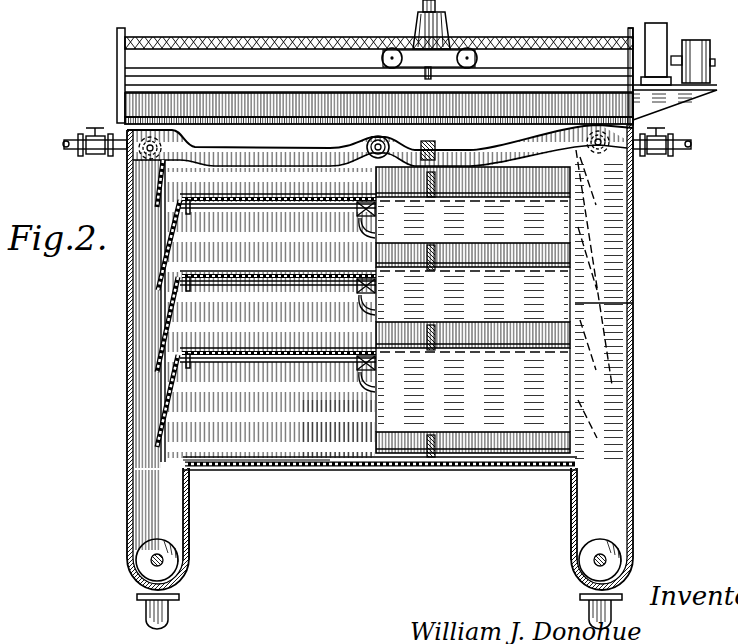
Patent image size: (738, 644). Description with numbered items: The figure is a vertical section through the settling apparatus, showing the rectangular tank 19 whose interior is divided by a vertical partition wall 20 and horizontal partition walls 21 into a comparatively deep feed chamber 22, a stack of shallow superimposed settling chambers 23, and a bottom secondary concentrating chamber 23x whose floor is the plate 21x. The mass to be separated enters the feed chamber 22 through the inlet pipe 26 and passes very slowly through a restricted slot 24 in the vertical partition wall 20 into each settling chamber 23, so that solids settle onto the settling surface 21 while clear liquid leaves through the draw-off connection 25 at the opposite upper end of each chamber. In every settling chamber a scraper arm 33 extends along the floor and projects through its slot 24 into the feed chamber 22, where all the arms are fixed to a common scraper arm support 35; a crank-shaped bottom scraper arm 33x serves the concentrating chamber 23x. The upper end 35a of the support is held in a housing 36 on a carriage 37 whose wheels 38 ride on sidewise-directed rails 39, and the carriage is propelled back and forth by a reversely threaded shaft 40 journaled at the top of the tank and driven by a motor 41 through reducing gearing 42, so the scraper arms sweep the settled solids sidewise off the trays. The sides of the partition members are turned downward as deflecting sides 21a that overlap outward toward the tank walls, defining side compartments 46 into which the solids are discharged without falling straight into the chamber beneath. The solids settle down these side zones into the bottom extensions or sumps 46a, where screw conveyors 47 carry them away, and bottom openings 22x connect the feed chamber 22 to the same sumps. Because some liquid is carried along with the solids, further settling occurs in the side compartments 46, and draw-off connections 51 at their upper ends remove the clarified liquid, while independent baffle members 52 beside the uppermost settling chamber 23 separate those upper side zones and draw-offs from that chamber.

The tank 19 is at (635, 220).
The vertical partition wall 20 is at (633, 303).
The horizontal partition wall 21 is at (272, 205).
The downwardly turned side 21a is at (658, 436).
The floor of bottom chamber 21x is at (258, 468).
The feed chamber 22 is at (478, 156).
The bottom openings 22x is at (648, 463).
The settling chamber 23 is at (342, 248).
The secondary concentrating chamber 23x is at (342, 440).
The restricted slot 24 is at (540, 170).
The draw-off connection 25 is at (376, 228).
The inlet pipe 26 is at (390, 142).
The scraper arm 33 is at (437, 188).
The bottom scraper arm 33x is at (440, 458).
The scraper arm support 35 is at (428, 80).
The upper end of support 35a is at (436, 6).
The housing 36 is at (418, 25).
The carriage 37 is at (455, 68).
The wheels 38 is at (382, 58).
The rails 39 is at (598, 62).
The shaft 40 is at (555, 44).
The motor 41 is at (696, 40).
The reducing gearing 42 is at (657, 24).
The side compartment 46 is at (132, 306).
The bottom extension 46a is at (654, 494).
The screw conveyor 47 is at (168, 561).
The draw-off connection 51 is at (72, 140).
The baffle member 52 is at (158, 190).